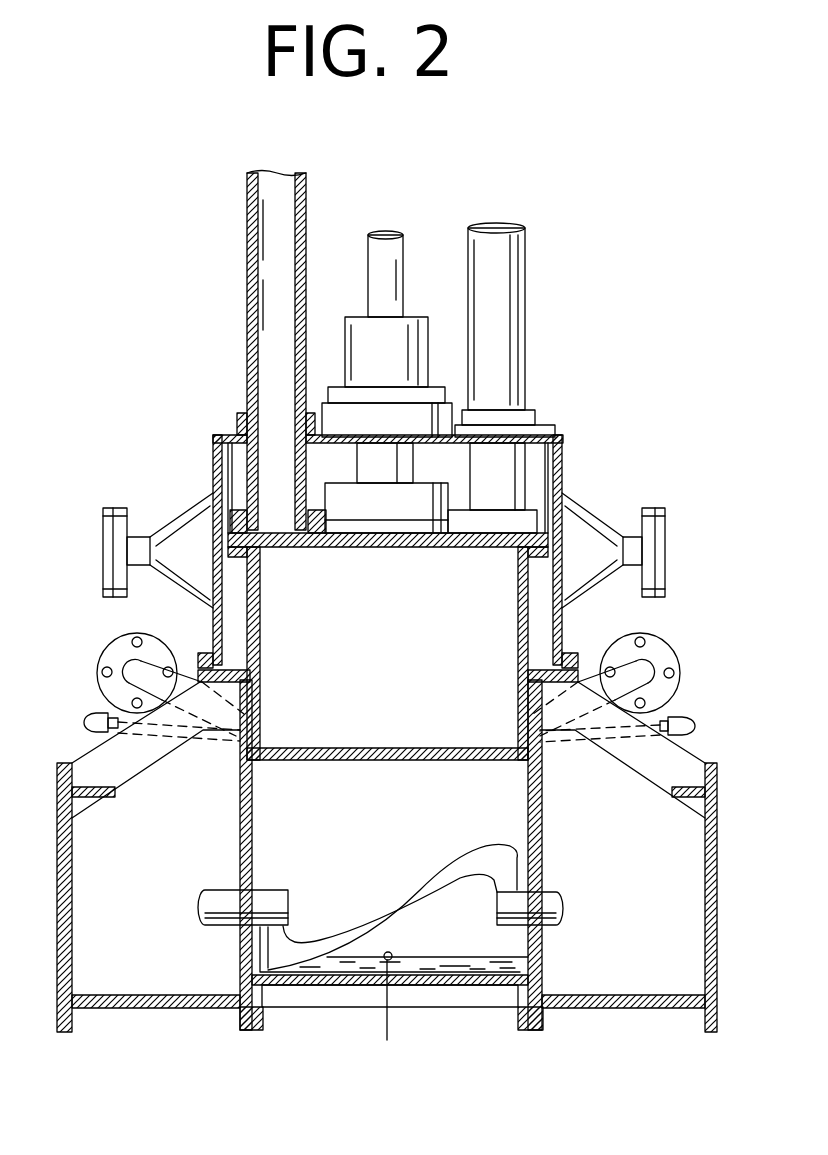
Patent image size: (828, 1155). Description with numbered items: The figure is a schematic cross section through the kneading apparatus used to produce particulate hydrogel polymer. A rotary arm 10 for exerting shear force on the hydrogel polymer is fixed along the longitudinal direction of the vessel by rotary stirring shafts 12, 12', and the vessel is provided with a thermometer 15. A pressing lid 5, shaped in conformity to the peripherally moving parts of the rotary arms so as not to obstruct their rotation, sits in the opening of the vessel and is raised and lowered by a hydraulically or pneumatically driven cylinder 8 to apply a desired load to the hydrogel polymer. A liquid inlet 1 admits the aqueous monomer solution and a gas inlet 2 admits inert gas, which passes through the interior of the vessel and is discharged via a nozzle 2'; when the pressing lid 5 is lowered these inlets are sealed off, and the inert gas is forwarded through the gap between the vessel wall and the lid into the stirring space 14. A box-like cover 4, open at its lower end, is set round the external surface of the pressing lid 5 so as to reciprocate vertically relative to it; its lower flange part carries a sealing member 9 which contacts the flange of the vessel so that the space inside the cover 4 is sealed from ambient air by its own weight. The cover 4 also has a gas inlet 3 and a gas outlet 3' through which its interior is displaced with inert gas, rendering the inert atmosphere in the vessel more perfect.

The liquid inlet 1 is at (147, 677).
The gas inlet 2 is at (141, 704).
The nozzle 2' is at (640, 711).
The gas inlet 3 is at (134, 550).
The gas outlet 3' is at (635, 550).
The cover 4 is at (563, 468).
The pressing lid 5 is at (372, 751).
The cylinder 8 is at (404, 266).
The sealing member 9 is at (575, 655).
The rotary arm 10 is at (330, 943).
The rotary stirring shaft 12 is at (207, 910).
The rotary stirring shaft 12' is at (566, 910).
The stirring space 14 is at (497, 815).
The thermometer 15 is at (393, 967).